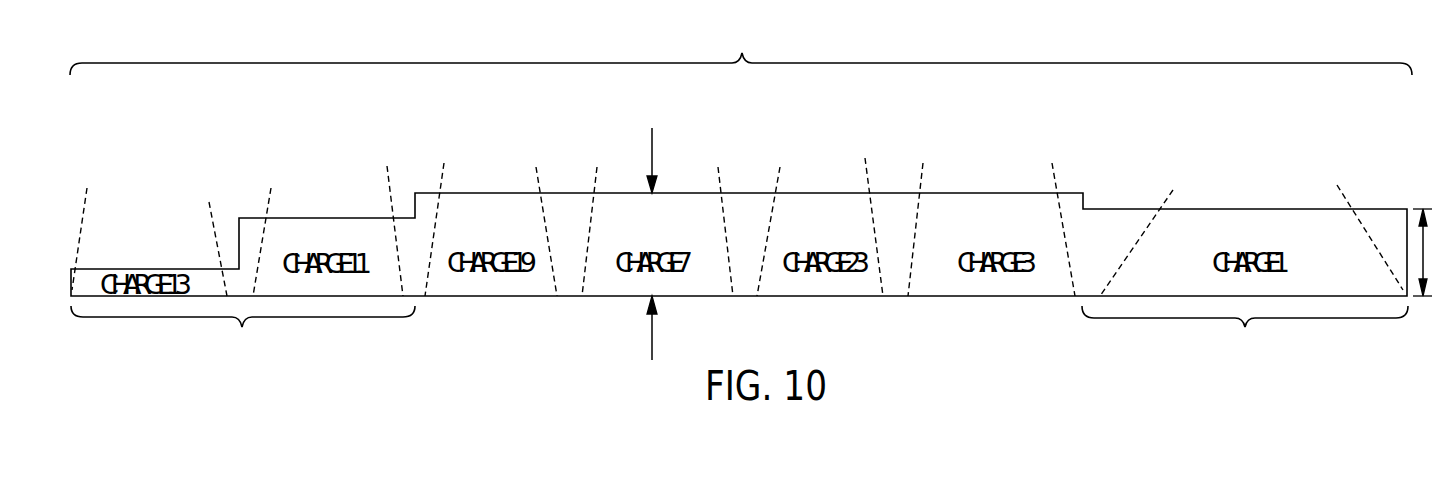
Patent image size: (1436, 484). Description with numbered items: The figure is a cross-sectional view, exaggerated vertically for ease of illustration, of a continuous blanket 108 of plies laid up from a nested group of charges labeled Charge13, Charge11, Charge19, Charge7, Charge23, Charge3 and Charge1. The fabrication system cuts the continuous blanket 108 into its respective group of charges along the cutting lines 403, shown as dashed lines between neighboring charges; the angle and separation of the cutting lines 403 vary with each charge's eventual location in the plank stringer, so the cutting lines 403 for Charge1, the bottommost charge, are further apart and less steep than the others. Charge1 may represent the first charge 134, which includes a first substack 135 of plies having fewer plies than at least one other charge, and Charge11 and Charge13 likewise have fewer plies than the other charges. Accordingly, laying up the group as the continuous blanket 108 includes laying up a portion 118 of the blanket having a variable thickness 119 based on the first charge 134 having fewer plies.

The continuous blanket 108 is at (741, 47).
The portion of the continuous blanket 118 is at (739, 335).
The variable thickness 119 is at (653, 152).
The first charge 134 is at (1258, 209).
The first substack 135 is at (1422, 240).
The cutting lines 403 is at (388, 193).